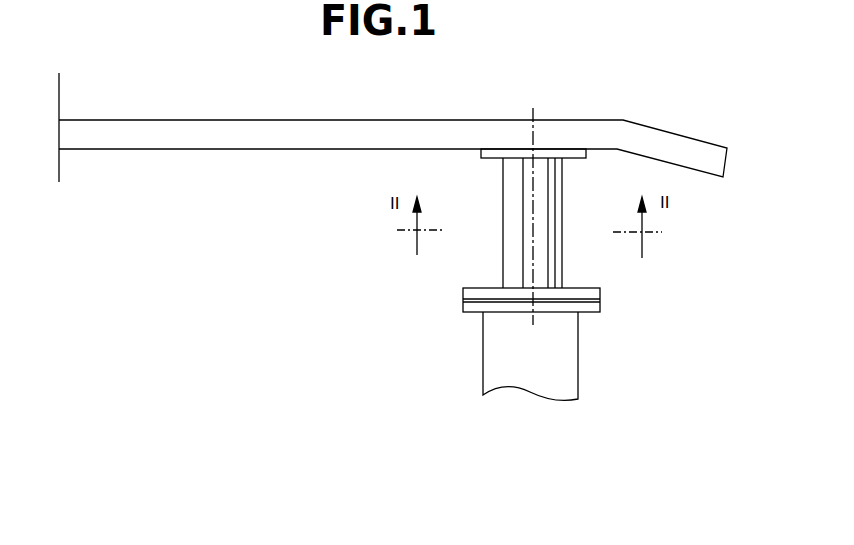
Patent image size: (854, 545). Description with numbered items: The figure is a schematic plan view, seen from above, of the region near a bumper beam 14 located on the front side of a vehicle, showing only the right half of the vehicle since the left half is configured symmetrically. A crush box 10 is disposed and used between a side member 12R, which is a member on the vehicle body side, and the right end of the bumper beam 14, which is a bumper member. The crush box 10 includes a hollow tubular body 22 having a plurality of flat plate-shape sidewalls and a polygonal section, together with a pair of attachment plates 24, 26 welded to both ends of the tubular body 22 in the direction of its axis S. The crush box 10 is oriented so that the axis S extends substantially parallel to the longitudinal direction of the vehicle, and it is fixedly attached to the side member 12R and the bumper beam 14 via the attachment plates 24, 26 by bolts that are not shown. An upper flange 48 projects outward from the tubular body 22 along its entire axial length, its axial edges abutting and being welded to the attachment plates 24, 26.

The crush box 10 is at (445, 280).
The side member 12R is at (562, 355).
The bumper beam 14 is at (183, 137).
The tubular body 22 is at (488, 213).
The attachment plate 24 is at (582, 293).
The attachment plate 26 is at (546, 150).
The upper flange 48 is at (554, 198).